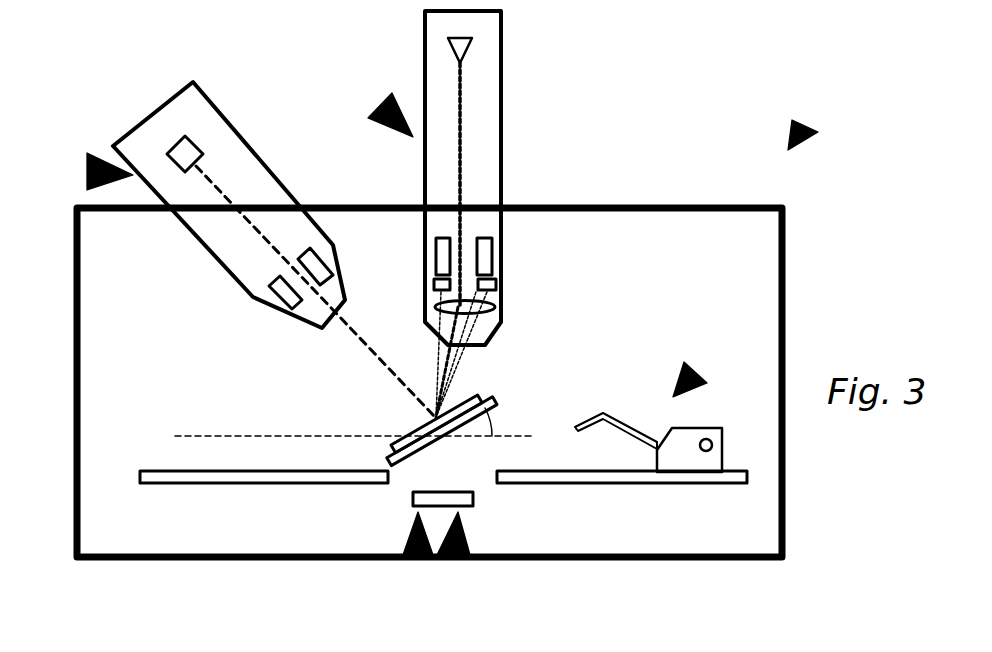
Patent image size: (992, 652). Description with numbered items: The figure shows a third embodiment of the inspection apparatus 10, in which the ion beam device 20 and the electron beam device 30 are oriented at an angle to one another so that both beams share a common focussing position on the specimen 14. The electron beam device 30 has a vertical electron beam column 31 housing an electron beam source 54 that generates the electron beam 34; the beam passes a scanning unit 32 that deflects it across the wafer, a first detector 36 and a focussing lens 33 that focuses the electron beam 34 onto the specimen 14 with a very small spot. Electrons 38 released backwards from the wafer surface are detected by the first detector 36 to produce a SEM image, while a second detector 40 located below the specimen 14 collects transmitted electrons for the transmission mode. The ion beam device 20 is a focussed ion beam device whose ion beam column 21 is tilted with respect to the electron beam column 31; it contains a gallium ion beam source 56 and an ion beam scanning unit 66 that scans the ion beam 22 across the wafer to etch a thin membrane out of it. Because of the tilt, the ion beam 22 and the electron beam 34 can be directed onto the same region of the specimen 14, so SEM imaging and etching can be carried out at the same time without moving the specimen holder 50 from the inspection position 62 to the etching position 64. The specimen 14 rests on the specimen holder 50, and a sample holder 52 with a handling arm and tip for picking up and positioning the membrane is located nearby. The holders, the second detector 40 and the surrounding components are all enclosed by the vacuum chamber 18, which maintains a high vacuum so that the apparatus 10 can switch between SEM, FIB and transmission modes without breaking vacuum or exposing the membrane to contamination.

The apparatus 10 is at (810, 123).
The specimen 14 is at (420, 432).
The vacuum chamber 18 is at (650, 207).
The ion beam device 20 is at (87, 170).
The ion beam column 21 is at (268, 164).
The ion beam 22 is at (270, 244).
The electron beam device 30 is at (392, 95).
The electron beam column 31 is at (503, 88).
The scanning unit 32 is at (492, 250).
The focussing lens 33 is at (497, 307).
The electron beam 34 is at (462, 136).
The first detector 36 is at (497, 284).
The electrons 38 is at (430, 365).
The second detector 40 is at (474, 500).
The specimen holder 50 is at (493, 410).
The sample holder 52 is at (690, 360).
The electron beam source 54 is at (472, 40).
The ion beam source 56 is at (189, 137).
The inspection position 62 is at (455, 561).
The etching position 64 is at (410, 561).
The ion beam scanning unit 66 is at (268, 287).